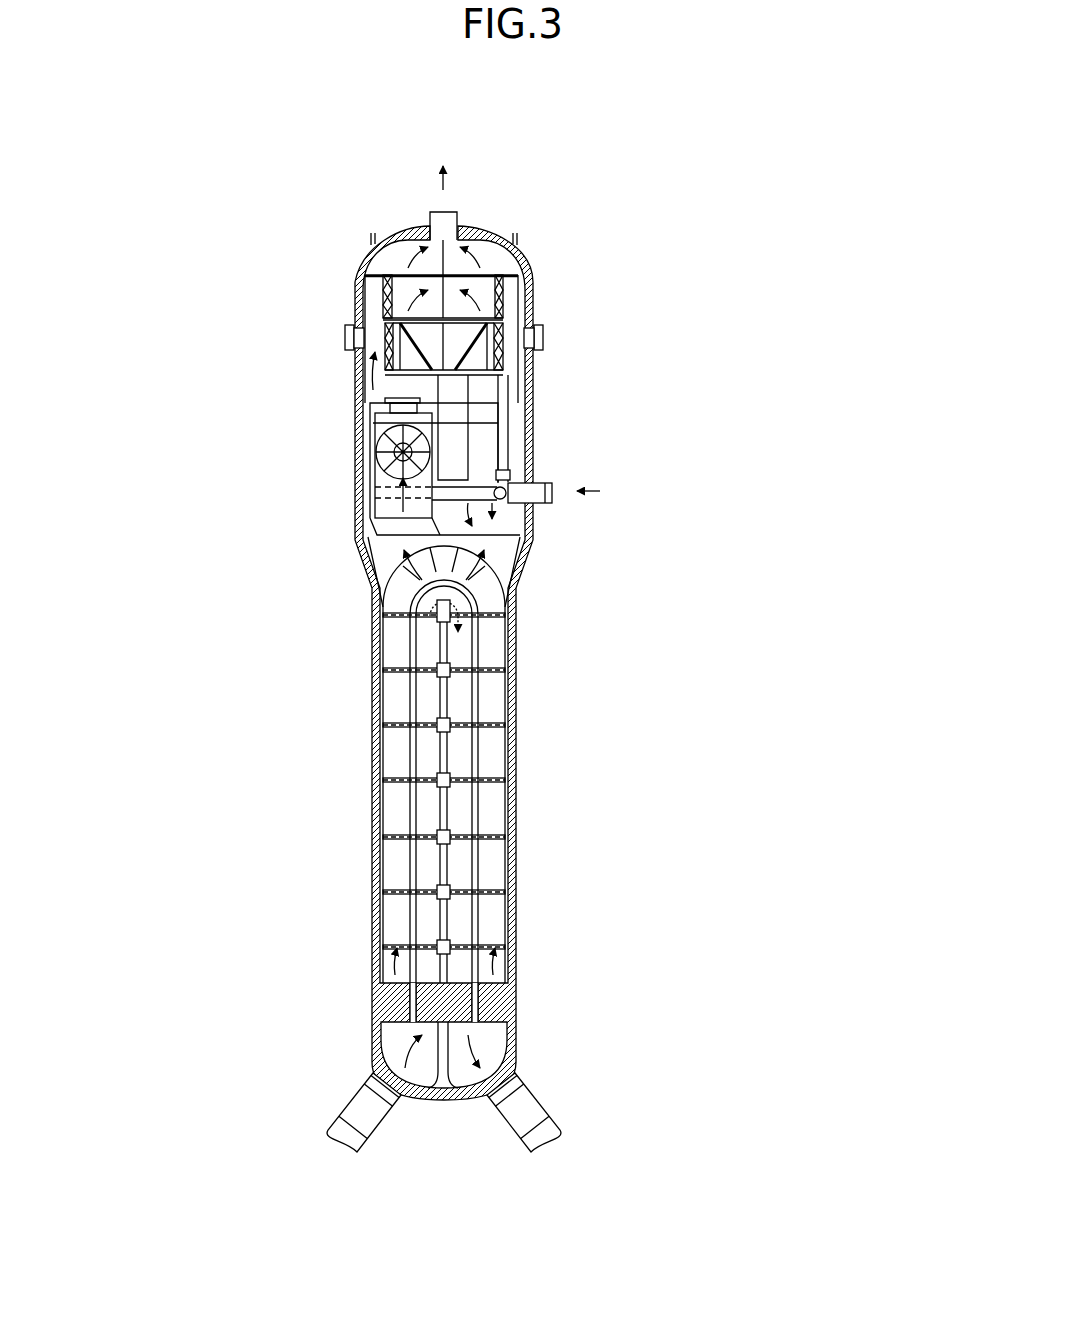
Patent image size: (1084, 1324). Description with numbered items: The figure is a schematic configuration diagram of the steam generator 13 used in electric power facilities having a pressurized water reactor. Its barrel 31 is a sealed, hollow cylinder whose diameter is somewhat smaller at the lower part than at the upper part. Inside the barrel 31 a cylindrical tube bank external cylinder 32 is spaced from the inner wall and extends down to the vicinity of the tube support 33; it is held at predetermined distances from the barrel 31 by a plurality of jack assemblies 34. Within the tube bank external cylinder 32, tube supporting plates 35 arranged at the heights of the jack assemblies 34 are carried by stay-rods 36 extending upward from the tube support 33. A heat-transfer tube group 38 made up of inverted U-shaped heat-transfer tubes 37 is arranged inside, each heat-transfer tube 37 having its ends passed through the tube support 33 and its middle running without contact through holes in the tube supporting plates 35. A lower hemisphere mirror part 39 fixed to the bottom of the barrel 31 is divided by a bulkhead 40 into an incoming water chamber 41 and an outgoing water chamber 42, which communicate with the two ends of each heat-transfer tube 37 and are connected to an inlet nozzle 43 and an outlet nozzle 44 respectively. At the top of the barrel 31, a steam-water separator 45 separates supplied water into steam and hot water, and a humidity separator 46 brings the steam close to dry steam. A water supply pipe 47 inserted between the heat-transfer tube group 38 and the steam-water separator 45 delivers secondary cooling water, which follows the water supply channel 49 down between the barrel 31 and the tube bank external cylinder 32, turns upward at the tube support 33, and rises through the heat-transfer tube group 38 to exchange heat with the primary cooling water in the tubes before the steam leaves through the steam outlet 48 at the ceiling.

The steam generator 13 is at (677, 140).
The barrel 31 is at (357, 372).
The tube bank external cylinder 32 is at (372, 562).
The tube support 33 is at (518, 1003).
The jack assembly 34 is at (372, 618).
The tube supporting plate 35 is at (510, 947).
The stay-rod 36 is at (448, 862).
The heat-transfer tube 37 is at (408, 757).
The heat-transfer tube group 38 is at (509, 580).
The lower hemisphere mirror part 39 is at (370, 1028).
The bulkhead 40 is at (452, 1097).
The incoming water chamber 41 is at (390, 1045).
The outgoing water chamber 42 is at (497, 1043).
The inlet nozzle 43 is at (390, 1110).
The outlet nozzle 44 is at (511, 1118).
The steam-water separator 45 is at (377, 443).
The humidity separator 46 is at (482, 358).
The water supply pipe 47 is at (547, 481).
The steam outlet 48 is at (445, 221).
The water supply channel 49 is at (377, 910).